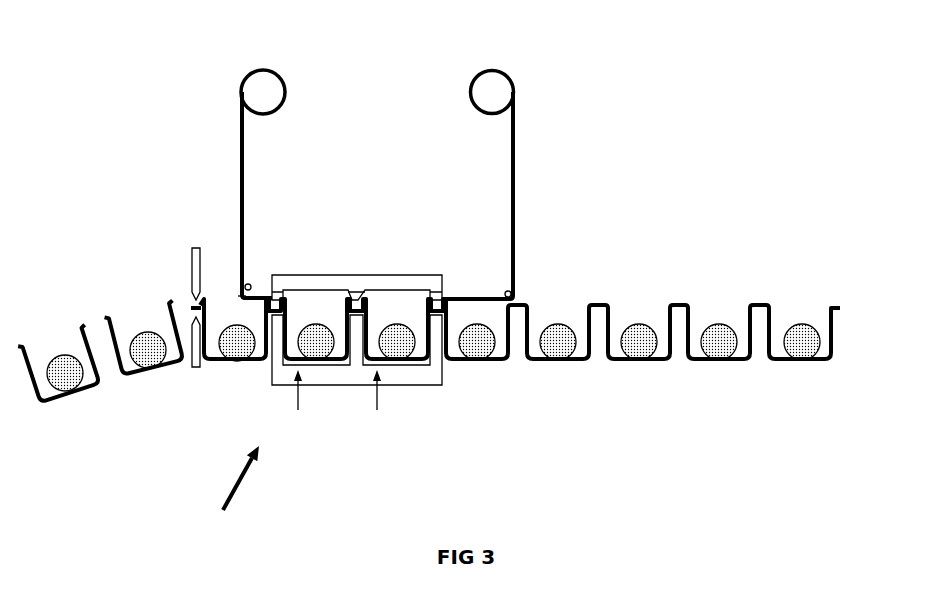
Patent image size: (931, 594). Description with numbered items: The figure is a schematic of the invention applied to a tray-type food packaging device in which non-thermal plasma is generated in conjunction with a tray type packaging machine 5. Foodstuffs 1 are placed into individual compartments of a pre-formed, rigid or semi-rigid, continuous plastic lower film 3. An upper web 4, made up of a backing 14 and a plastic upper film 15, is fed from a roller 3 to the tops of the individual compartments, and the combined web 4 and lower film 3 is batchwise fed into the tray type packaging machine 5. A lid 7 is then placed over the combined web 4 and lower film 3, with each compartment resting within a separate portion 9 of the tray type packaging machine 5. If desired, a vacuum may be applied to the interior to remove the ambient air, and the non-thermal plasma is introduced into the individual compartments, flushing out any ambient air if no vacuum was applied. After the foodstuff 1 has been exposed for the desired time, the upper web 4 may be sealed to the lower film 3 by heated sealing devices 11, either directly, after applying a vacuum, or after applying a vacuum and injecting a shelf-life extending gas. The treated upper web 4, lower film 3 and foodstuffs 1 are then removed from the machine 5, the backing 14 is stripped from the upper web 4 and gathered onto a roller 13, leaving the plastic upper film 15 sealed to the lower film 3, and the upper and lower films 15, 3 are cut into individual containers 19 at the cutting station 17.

The foodstuffs 1 is at (397, 335).
The lower film 3 is at (497, 88).
The upper web 4 is at (515, 200).
The tray type packaging machine 5 is at (238, 489).
The lid 7 is at (310, 283).
The separate portion 9 is at (298, 410).
The heated sealing devices 11 is at (275, 293).
The roller 13 is at (258, 88).
The backing 14 is at (243, 162).
The plastic upper film 15 is at (242, 292).
The cutting station 17 is at (195, 274).
The containers 19 is at (71, 418).